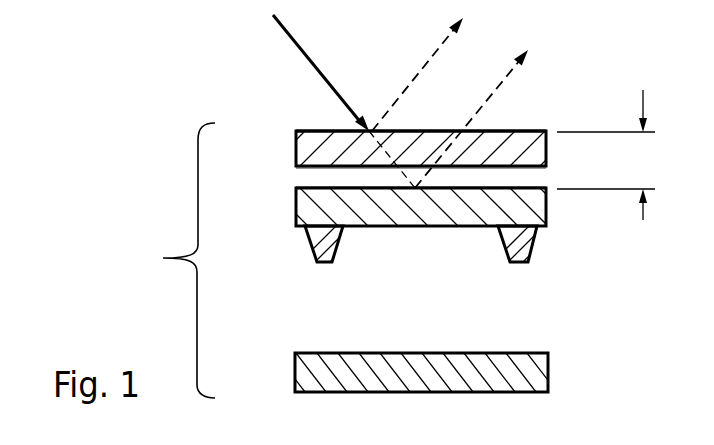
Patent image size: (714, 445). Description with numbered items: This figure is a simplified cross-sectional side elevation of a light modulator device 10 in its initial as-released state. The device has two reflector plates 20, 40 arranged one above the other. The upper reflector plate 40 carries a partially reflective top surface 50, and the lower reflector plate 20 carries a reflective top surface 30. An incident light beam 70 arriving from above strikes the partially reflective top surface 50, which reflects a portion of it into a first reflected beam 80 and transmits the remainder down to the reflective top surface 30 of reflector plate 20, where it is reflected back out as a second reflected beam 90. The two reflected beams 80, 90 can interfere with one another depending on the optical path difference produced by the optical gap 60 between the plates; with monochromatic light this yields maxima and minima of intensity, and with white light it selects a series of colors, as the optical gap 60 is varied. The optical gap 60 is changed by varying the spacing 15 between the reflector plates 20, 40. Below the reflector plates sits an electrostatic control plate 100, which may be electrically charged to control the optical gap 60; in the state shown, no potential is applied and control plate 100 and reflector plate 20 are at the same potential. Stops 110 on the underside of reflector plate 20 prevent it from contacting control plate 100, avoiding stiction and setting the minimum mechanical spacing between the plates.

The light modulator device 10 is at (163, 258).
The spacing 15 is at (537, 178).
The reflector plate 20 is at (297, 207).
The reflective top surface 30 is at (297, 181).
The reflector plate 40 is at (297, 140).
The partially reflective top surface 50 is at (508, 132).
The optical gap 60 is at (608, 155).
The incident light beam 70 is at (293, 40).
The first reflected beam 80 is at (432, 57).
The second reflected beam 90 is at (496, 90).
The electrostatic control plate 100 is at (508, 353).
The stops 110 is at (338, 243).